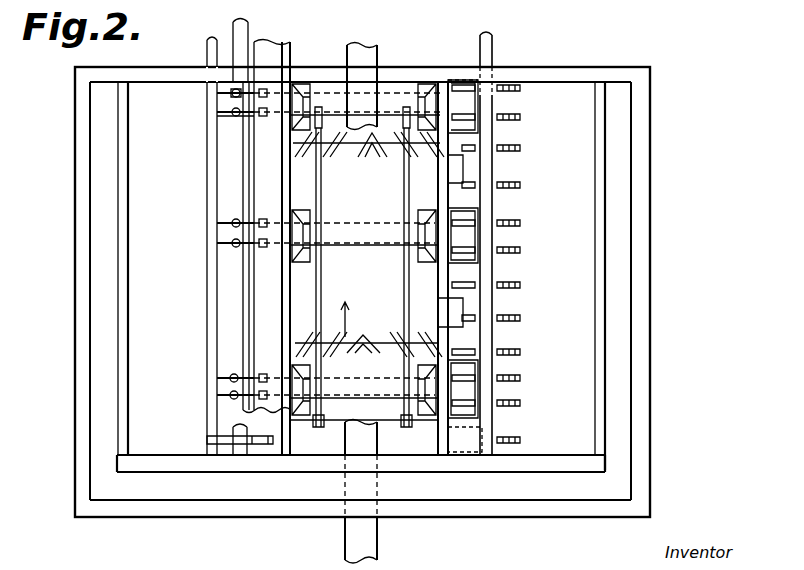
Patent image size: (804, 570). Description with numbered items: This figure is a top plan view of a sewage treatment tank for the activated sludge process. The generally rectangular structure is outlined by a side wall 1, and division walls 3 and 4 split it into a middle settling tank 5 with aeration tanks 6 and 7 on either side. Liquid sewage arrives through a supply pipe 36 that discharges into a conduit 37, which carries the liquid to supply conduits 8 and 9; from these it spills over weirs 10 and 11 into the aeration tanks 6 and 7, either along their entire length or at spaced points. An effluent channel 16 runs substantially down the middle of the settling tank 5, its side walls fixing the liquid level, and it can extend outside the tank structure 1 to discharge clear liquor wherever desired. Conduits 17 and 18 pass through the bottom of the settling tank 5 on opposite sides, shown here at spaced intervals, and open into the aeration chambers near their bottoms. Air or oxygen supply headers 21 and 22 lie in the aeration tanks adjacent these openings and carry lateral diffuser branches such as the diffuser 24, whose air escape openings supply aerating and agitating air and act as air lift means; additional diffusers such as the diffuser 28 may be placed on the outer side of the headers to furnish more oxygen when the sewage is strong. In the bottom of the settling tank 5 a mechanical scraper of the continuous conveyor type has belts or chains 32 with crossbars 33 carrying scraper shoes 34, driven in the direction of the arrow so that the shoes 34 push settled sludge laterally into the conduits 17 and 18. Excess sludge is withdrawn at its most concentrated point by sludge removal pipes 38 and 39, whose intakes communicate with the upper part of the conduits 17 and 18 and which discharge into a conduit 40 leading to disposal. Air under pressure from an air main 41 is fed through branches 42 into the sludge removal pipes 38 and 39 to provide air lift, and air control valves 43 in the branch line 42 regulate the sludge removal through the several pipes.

The side wall 1 is at (480, 517).
The division wall 3 is at (285, 295).
The division wall 4 is at (442, 280).
The settling tank 5 is at (313, 447).
The aeration tank 6 is at (178, 448).
The aeration tank 7 is at (543, 443).
The supply conduit 8 is at (102, 290).
The supply conduit 9 is at (622, 298).
The weir 10 is at (125, 315).
The weir 11 is at (597, 318).
The effluent channel 16 is at (370, 62).
The conduit 17 is at (303, 222).
The conduit 18 is at (417, 217).
The air supply header 21 is at (233, 25).
The air supply header 22 is at (483, 312).
The diffuser branch 24 is at (463, 283).
The diffuser 28 is at (518, 348).
The belt or chain 32 is at (320, 278).
The crossbar 33 is at (345, 352).
The scraper shoe 34 is at (358, 329).
The liquid sewage supply pipe 36 is at (372, 542).
The conduit 37 is at (258, 493).
The sludge removal pipe 38 is at (267, 242).
The sludge removal pipe 39 is at (265, 220).
The waste sludge conduit 40 is at (258, 270).
The air main 41 is at (208, 100).
The air branch 42 is at (233, 113).
The air control valve 43 is at (238, 118).